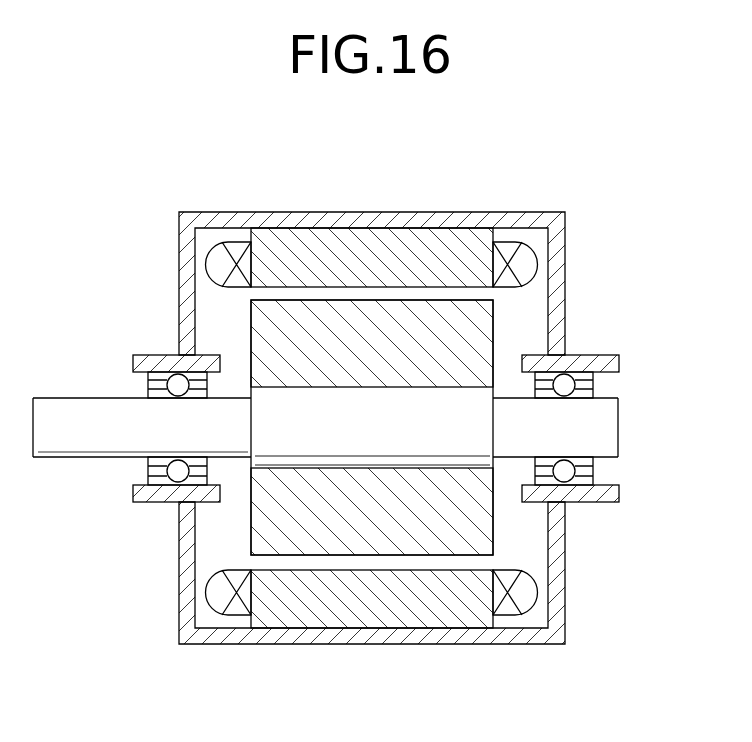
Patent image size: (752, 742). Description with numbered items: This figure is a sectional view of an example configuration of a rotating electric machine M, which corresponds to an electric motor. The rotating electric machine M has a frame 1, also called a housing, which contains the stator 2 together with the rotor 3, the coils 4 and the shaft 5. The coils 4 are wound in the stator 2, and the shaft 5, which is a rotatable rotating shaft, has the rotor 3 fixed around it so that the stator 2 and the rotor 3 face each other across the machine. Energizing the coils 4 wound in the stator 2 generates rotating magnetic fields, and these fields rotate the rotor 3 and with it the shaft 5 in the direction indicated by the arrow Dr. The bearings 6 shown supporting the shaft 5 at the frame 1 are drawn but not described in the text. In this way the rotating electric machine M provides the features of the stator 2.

The rotating electric machine M is at (108, 266).
The arrow Dr is at (90, 474).
The frame 1 is at (210, 222).
The stator 2 is at (293, 247).
The rotor 3 is at (373, 322).
The coils 4 is at (505, 252).
The shaft 5 is at (608, 418).
The bearing 6 is at (563, 471).